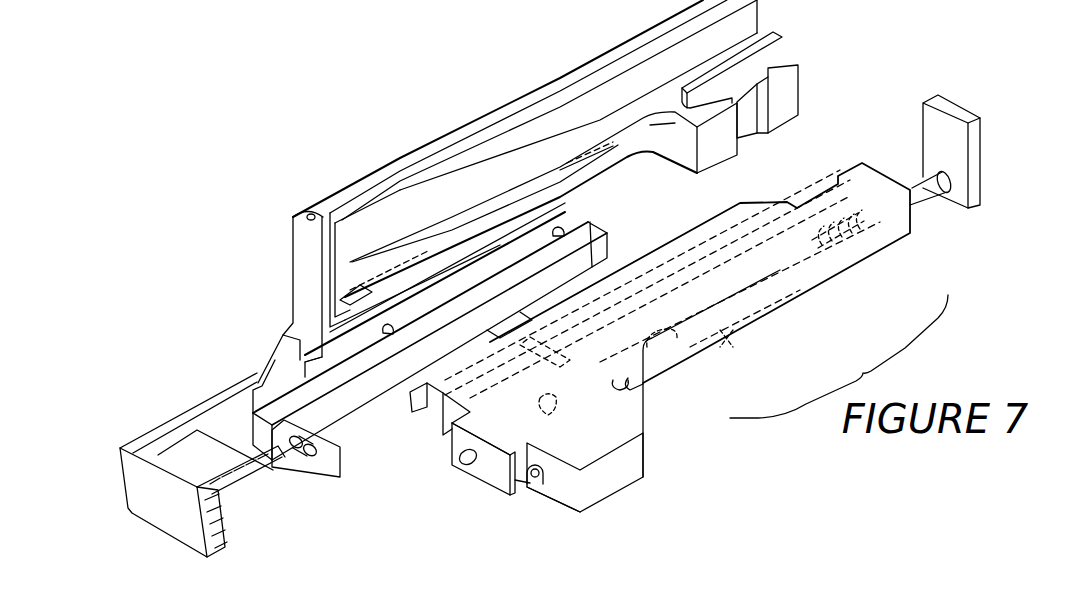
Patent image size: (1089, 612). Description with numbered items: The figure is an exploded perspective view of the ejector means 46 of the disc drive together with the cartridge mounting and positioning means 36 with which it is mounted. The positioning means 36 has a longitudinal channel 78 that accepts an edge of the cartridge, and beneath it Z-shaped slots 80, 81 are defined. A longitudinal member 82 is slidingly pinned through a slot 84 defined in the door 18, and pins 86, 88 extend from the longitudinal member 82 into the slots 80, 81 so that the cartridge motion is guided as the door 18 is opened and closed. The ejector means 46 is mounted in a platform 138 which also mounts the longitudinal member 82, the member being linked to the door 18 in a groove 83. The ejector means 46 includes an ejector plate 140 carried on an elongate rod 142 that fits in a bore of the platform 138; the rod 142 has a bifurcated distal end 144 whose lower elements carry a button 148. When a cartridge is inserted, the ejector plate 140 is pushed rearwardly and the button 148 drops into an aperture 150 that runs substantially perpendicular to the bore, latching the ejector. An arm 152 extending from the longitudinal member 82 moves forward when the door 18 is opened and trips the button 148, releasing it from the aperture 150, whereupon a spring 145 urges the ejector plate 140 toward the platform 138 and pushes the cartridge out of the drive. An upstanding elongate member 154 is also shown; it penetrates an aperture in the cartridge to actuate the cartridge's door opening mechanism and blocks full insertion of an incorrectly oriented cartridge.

The door 18 is at (132, 478).
The cartridge mounting and positioning means 36 is at (405, 122).
The ejector means 46 is at (990, 238).
The longitudinal channel 78 is at (620, 97).
The Z-shaped slot 80 is at (388, 265).
The Z-shaped slot 81 is at (563, 163).
The longitudinal member 82 is at (347, 405).
The groove 83 is at (513, 393).
The slot 84 is at (320, 448).
The pin 86 is at (387, 335).
The pin 88 is at (560, 230).
The platform 138 is at (722, 332).
The ejector plate 140 is at (973, 155).
The elongate rod 142 is at (928, 193).
The bifurcated distal end 144 is at (618, 395).
The spring 145 is at (828, 223).
The button 148 is at (647, 388).
The aperture 150 is at (613, 388).
The arm 152 is at (672, 258).
The elongate member 154 is at (777, 50).